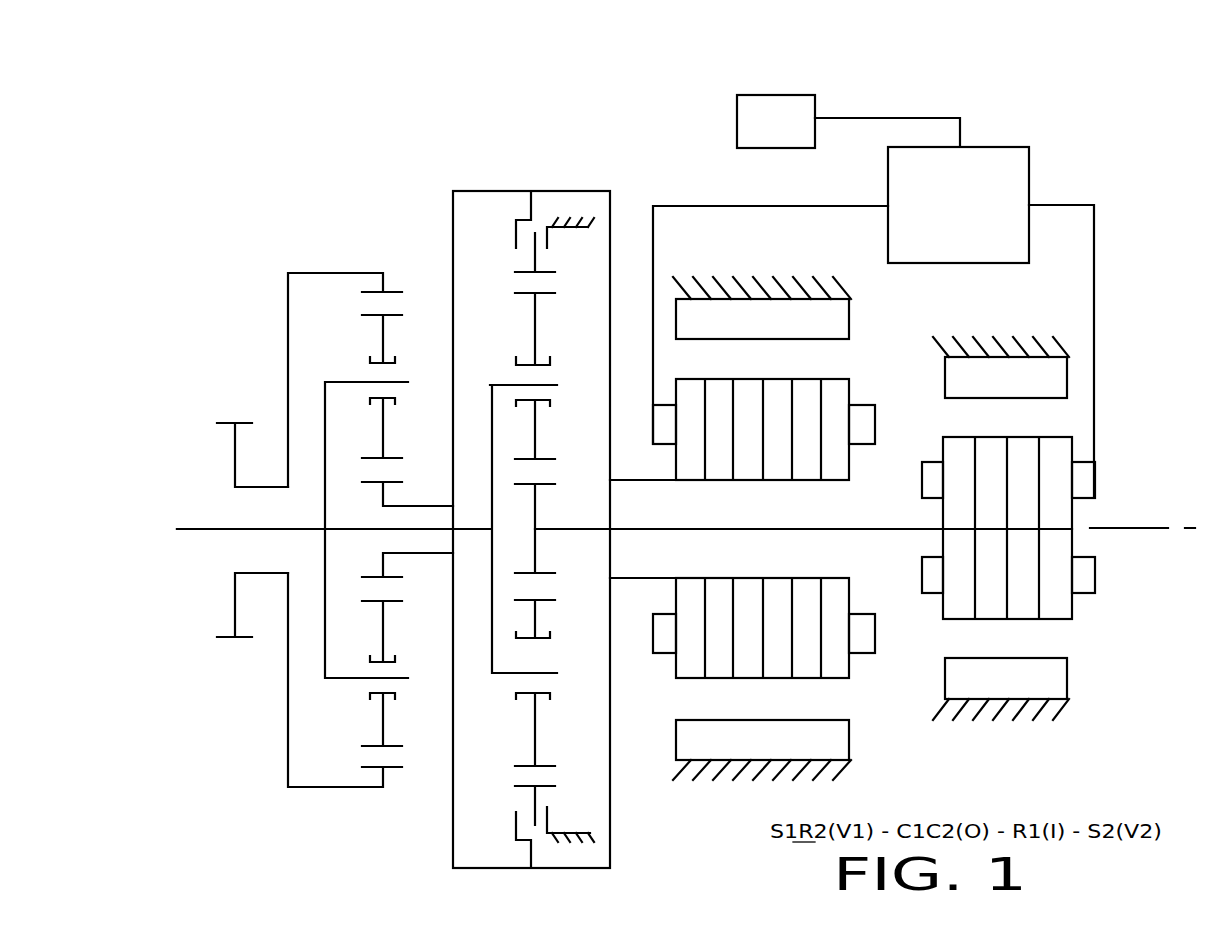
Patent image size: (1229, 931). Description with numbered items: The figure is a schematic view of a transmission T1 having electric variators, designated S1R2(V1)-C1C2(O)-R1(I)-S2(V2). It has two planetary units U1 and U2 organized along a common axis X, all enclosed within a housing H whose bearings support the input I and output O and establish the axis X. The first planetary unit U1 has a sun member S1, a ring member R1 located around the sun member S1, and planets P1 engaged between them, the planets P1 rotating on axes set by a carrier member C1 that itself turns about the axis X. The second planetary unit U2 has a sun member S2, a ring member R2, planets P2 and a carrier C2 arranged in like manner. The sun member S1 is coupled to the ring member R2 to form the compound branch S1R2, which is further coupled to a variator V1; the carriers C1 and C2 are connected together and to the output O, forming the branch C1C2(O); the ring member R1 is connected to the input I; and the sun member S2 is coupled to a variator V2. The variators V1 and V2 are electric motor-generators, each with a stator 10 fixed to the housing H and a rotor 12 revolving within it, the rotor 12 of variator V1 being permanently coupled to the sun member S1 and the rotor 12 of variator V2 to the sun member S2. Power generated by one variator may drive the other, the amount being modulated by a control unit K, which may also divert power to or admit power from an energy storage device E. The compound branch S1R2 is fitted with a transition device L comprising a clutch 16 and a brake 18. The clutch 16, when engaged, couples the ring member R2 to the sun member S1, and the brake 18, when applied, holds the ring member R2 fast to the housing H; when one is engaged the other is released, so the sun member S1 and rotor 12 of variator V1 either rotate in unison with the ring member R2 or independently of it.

The transmission T1 is at (348, 216).
The ring member R1 is at (393, 293).
The planets P1 is at (383, 343).
The sun member S1 is at (383, 428).
The carrier member C1 is at (323, 572).
The input I is at (233, 455).
The output O is at (215, 532).
The planetary unit U1 is at (316, 803).
The planetary unit U2 is at (455, 876).
The clutch 16 is at (516, 230).
The brake 18 is at (552, 240).
The transition device L is at (545, 220).
The ring member R2 is at (530, 270).
The planets P2 is at (533, 338).
The sun member S2 is at (535, 511).
The carrier C2 is at (490, 548).
The energy storage device E is at (785, 130).
The control unit K is at (960, 203).
The stator 10 is at (845, 318).
The rotor 12 is at (837, 470).
The variator V1 is at (856, 695).
The variator V2 is at (1091, 638).
The housing H is at (575, 843).
The axis X is at (686, 542).